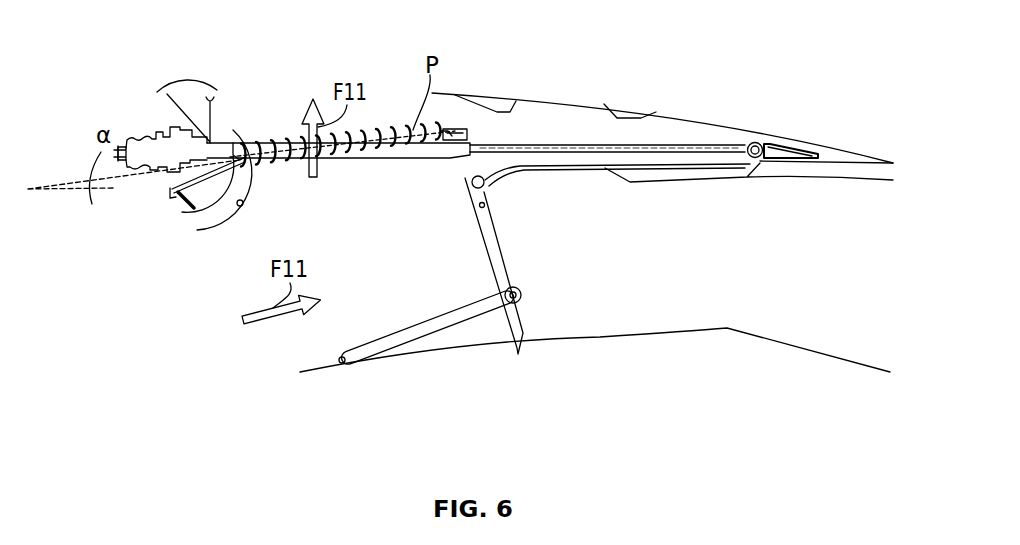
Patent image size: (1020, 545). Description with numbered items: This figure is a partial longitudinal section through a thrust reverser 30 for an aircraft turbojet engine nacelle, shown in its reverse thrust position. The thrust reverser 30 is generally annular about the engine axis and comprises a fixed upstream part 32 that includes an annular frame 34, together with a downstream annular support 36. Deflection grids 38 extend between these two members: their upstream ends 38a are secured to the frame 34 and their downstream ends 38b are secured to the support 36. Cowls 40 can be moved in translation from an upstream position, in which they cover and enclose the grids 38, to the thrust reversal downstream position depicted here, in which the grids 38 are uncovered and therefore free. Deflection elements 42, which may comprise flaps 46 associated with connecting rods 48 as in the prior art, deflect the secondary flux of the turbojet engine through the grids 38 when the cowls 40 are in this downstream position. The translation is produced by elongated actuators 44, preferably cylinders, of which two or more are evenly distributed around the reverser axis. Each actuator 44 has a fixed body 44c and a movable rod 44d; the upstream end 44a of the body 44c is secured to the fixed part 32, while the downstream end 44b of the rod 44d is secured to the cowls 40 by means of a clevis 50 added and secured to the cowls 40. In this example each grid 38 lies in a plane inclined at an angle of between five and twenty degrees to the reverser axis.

The thrust reverser 30 is at (678, 107).
The fixed upstream part 32 is at (143, 94).
The annular frame 34 is at (167, 200).
The downstream annular support 36 is at (465, 125).
The deflection grids 38 is at (377, 127).
The upstream ends of the grids 38a is at (233, 143).
The downstream ends of the grids 38b is at (450, 130).
The cowls 40 is at (610, 107).
The deflection elements 42 is at (493, 228).
The actuators 44 is at (182, 120).
The upstream end of the actuator 44a is at (148, 160).
The downstream end of the actuator 44b is at (753, 145).
The fixed body 44c is at (357, 158).
The movable rod 44d is at (553, 148).
The flaps 46 is at (516, 294).
The connecting rods 48 is at (443, 337).
The clevis 50 is at (797, 145).